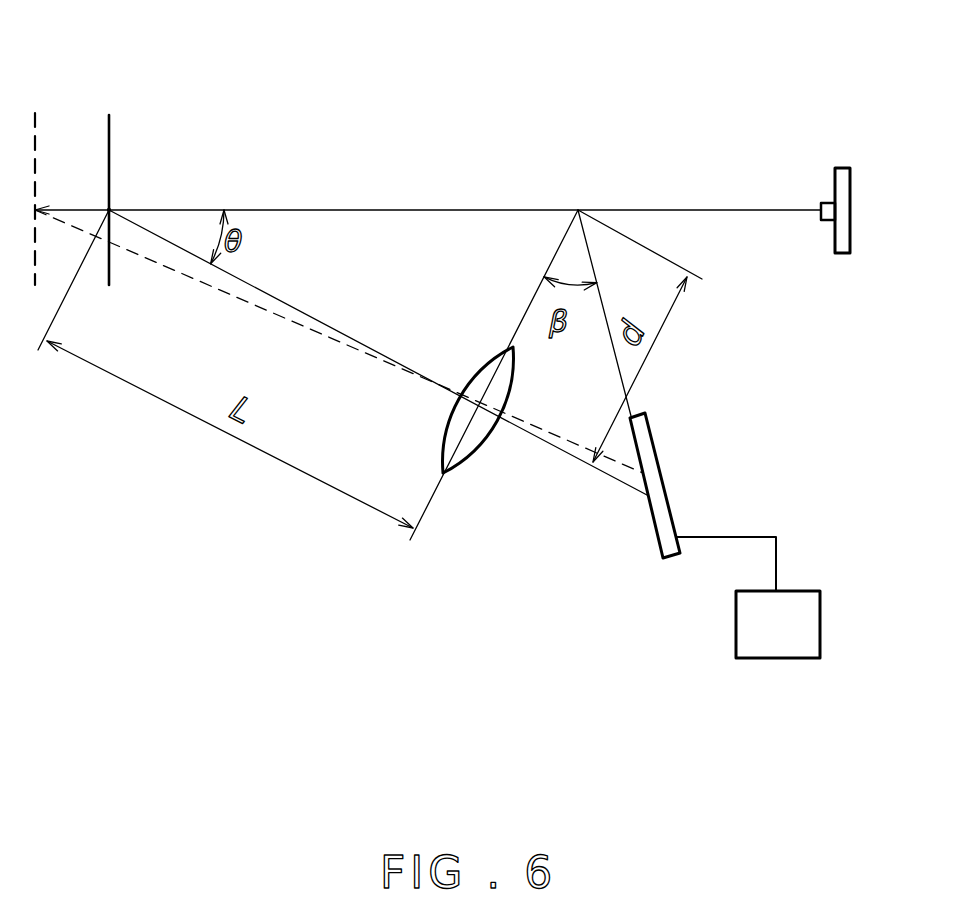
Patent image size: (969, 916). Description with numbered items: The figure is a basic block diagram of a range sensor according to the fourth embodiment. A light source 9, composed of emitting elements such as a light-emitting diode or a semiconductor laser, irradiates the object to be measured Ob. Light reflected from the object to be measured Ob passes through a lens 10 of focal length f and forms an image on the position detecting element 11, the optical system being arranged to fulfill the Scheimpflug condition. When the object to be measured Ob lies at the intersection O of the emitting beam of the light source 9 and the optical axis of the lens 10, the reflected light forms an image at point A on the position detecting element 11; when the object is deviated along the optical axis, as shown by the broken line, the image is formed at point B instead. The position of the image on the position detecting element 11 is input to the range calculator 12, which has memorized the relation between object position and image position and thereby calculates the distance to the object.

The light source 9 is at (843, 167).
The lens 10 is at (472, 443).
The position detecting element 11 is at (660, 530).
The range calculator 12 is at (783, 658).
The object to be measured Ob is at (35, 113).
The intersection O is at (111, 207).
The point A is at (648, 494).
The point B is at (645, 472).